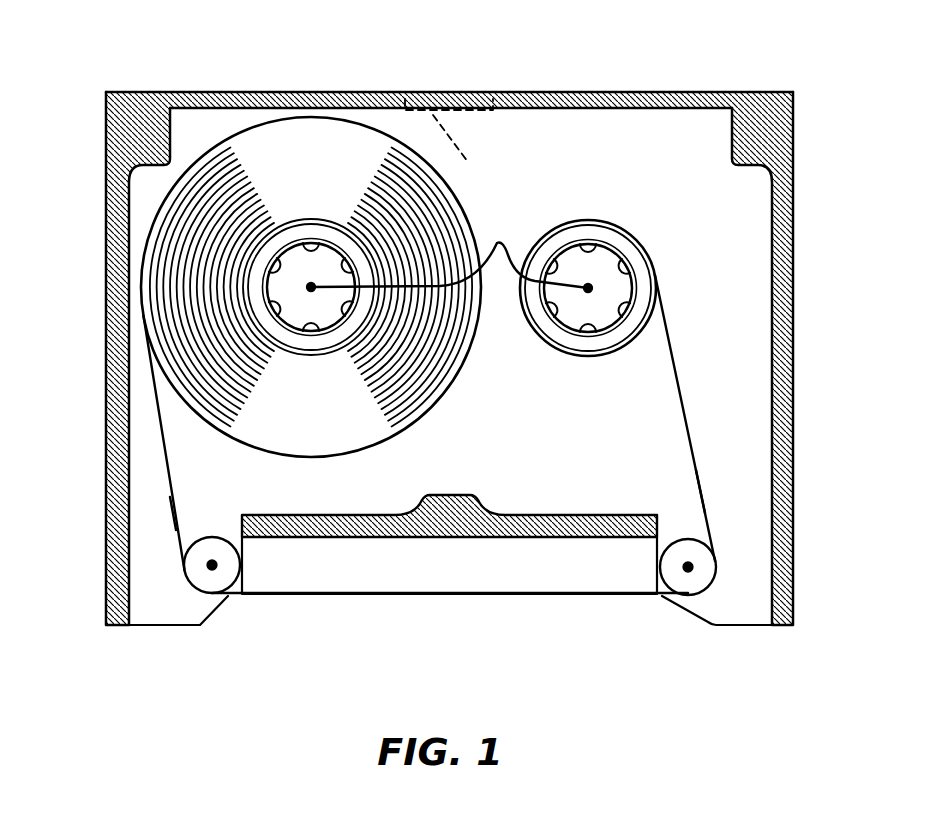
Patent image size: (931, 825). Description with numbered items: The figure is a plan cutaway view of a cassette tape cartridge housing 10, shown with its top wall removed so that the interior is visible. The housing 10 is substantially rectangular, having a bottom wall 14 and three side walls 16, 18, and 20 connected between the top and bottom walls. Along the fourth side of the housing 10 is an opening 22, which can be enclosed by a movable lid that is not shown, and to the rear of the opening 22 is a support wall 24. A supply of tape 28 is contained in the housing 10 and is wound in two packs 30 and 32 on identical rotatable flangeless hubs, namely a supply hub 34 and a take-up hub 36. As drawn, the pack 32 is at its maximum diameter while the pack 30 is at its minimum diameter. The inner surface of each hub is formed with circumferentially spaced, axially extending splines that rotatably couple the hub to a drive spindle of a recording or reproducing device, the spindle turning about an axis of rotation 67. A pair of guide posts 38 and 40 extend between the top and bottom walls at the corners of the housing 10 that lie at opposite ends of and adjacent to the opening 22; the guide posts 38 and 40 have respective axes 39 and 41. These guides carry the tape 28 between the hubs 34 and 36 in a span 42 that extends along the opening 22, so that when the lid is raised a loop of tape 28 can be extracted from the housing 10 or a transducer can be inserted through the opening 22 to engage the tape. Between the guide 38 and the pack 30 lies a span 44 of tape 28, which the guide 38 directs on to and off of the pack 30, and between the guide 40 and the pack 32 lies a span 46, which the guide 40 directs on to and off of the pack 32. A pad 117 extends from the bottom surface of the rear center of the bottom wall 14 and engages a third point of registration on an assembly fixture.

The cassette tape cartridge housing 10 is at (667, 50).
The bottom wall 14 is at (163, 607).
The side wall 16 is at (105, 437).
The side wall 18 is at (229, 92).
The side wall 20 is at (795, 440).
The opening 22 is at (449, 560).
The support wall 24 is at (548, 502).
The tape 28 is at (681, 377).
The pack 30 is at (586, 357).
The pack 32 is at (455, 384).
The supply hub 34 is at (548, 322).
The take-up hub 36 is at (310, 343).
The guide post 38 is at (700, 578).
The axis 39 is at (688, 566).
The guide post 40 is at (225, 577).
The axis 41 is at (212, 564).
The tape span 42 is at (436, 597).
The tape span 44 is at (698, 462).
The tape span 46 is at (173, 513).
The axis of rotation 67 is at (449, 252).
The pad 117 is at (461, 137).